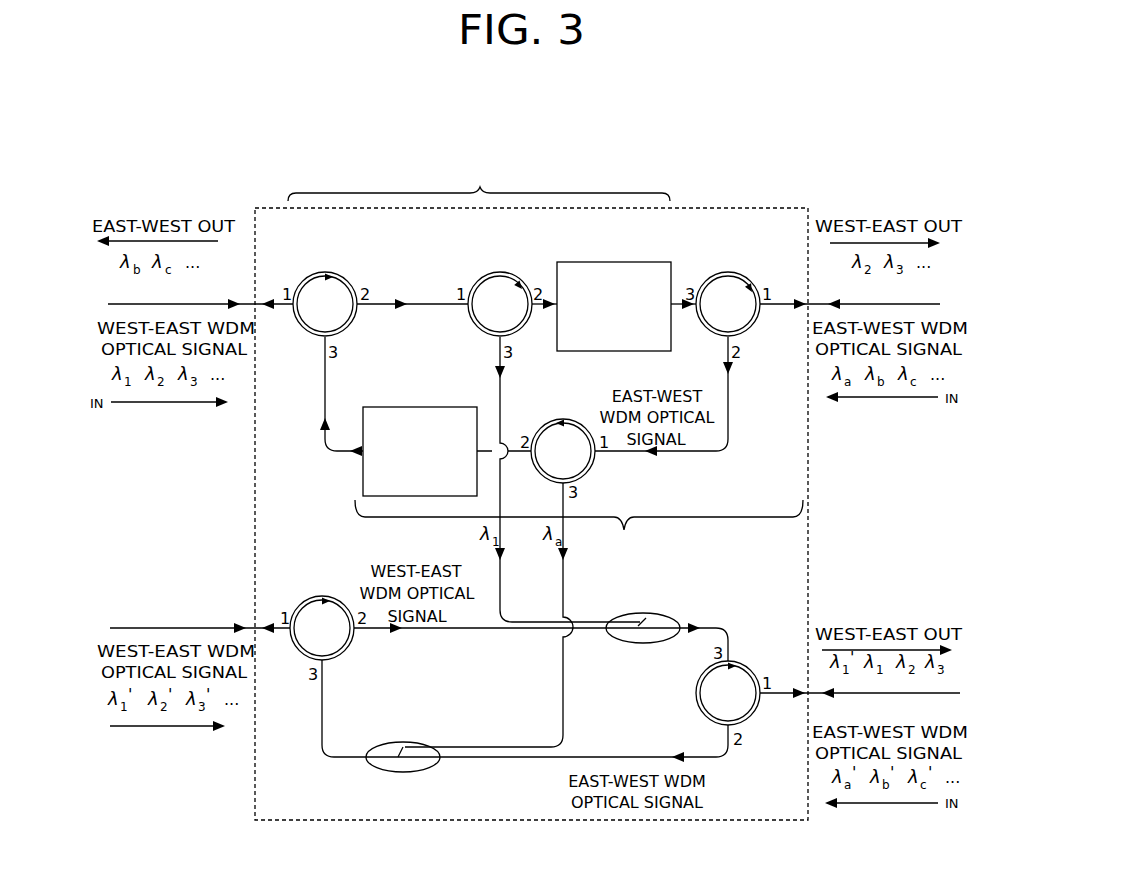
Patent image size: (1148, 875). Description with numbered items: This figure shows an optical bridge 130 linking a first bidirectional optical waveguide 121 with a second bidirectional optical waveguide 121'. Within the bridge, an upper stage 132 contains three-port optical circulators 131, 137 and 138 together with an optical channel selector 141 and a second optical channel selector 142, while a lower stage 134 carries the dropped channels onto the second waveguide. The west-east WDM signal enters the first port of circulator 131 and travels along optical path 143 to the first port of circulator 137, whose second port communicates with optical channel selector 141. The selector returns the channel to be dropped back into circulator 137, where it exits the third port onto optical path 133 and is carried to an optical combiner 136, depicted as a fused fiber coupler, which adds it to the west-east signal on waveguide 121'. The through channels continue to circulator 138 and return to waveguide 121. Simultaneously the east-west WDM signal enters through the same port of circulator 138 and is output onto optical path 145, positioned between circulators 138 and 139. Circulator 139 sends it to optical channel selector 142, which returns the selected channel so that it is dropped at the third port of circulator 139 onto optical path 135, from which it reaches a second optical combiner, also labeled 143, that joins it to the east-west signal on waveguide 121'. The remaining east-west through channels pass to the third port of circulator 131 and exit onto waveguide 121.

The optical bridge 130 is at (645, 146).
The first stage 132 is at (479, 183).
The second stage 134 is at (579, 528).
The first bidirectional optical waveguide 121 is at (529, 295).
The second bidirectional optical waveguide 121' is at (535, 659).
The optical circulator 131 is at (301, 333).
The optical circulator 137 is at (473, 333).
The optical circulator 138 is at (713, 276).
The optical circulator 139 is at (584, 478).
The optical channel selector 141 is at (613, 261).
The optical channel selector 142 is at (412, 405).
The optical path 143 is at (427, 302).
The optical path 133 is at (500, 418).
The optical path 145 is at (729, 420).
The optical path 135 is at (567, 581).
The optical combiner 136 is at (650, 612).